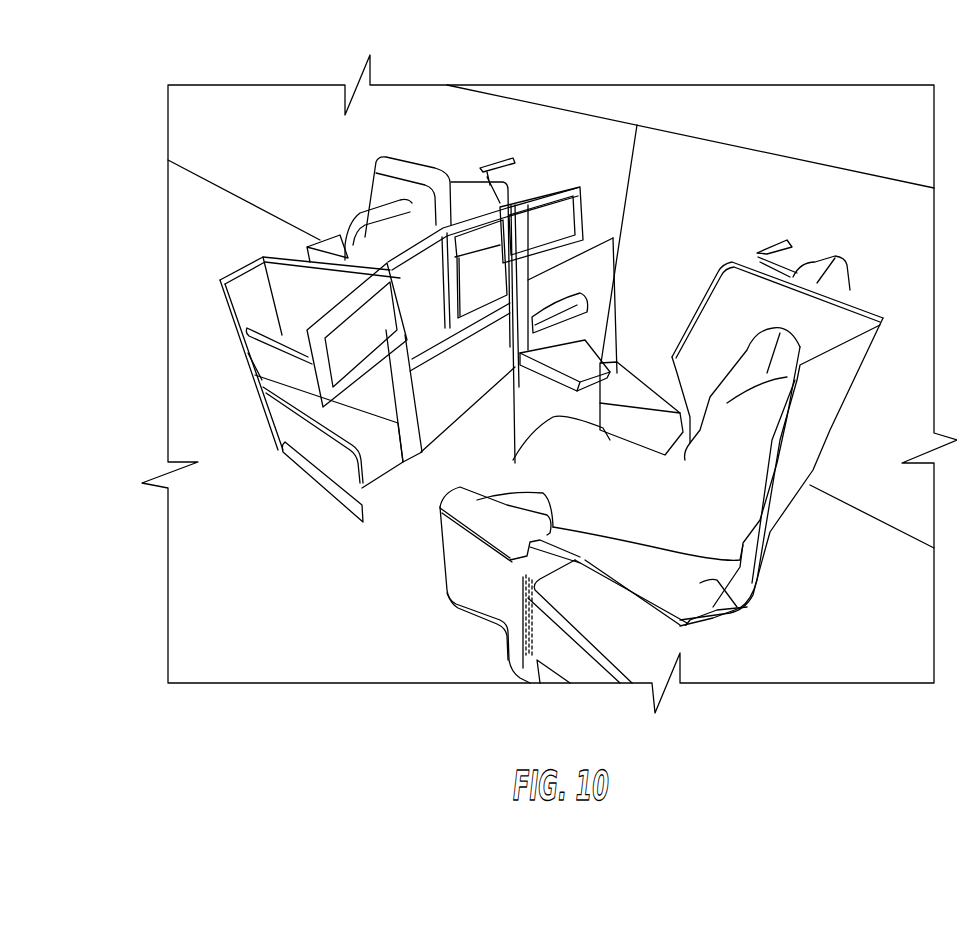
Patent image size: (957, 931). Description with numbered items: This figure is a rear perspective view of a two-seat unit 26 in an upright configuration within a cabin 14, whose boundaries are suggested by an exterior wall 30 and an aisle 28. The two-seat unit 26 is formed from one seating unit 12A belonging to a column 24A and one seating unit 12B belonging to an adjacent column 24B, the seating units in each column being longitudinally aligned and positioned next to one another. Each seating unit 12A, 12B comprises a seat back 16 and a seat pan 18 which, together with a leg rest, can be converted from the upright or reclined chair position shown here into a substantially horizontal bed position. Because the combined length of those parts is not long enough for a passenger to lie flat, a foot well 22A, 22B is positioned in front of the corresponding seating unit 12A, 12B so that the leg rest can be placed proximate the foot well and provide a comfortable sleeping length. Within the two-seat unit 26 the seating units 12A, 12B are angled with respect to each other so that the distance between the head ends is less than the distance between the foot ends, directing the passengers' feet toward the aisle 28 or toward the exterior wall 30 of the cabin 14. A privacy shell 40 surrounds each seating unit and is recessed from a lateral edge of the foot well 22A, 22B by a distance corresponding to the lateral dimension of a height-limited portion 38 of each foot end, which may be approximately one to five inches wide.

The cabin 14 is at (718, 147).
The exterior wall 30 is at (582, 132).
The column 24A is at (440, 158).
The column 24B is at (215, 205).
The privacy shell 40 is at (257, 325).
The height-limited portion 38 is at (283, 412).
The foot well 22B is at (365, 440).
The foot well 22A is at (557, 295).
The seating unit 12A is at (840, 282).
The seating unit 12B is at (737, 443).
The seat back 16 is at (787, 353).
The seat pan 18 is at (548, 494).
The two-seat unit 26 is at (700, 583).
The aisle 28 is at (721, 721).